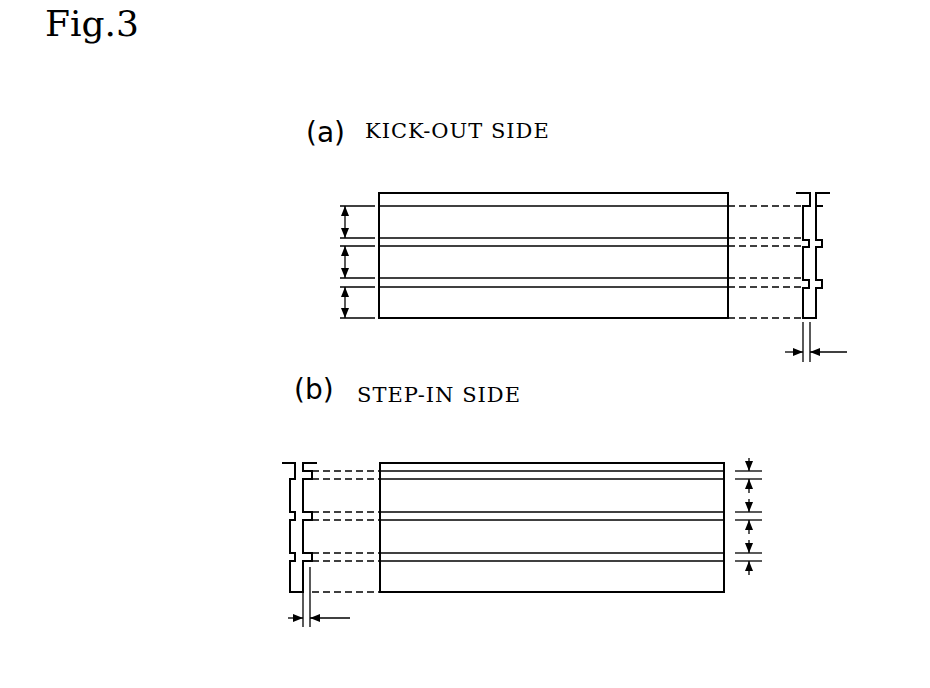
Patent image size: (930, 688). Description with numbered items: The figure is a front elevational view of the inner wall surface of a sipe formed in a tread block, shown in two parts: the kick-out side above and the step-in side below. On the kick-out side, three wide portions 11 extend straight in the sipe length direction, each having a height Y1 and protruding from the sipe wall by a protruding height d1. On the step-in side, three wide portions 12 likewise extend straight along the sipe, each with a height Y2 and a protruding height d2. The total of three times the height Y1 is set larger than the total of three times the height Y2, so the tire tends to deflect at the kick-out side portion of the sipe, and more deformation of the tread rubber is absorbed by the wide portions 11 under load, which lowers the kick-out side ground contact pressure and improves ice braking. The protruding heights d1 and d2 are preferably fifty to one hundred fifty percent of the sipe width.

The wide portion 11 is at (487, 217).
The wide portion 12 is at (479, 477).
The height of the wide portion Y1 is at (343, 221).
The height of the wide portion Y2 is at (762, 477).
The protruding height of the wide portion d1 is at (816, 359).
The protruding height of the wide portion d2 is at (317, 616).